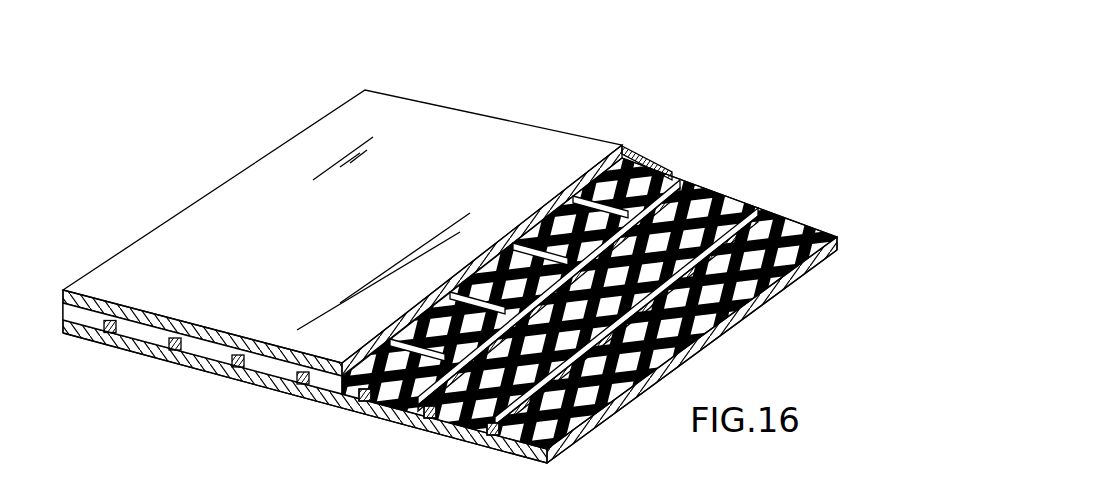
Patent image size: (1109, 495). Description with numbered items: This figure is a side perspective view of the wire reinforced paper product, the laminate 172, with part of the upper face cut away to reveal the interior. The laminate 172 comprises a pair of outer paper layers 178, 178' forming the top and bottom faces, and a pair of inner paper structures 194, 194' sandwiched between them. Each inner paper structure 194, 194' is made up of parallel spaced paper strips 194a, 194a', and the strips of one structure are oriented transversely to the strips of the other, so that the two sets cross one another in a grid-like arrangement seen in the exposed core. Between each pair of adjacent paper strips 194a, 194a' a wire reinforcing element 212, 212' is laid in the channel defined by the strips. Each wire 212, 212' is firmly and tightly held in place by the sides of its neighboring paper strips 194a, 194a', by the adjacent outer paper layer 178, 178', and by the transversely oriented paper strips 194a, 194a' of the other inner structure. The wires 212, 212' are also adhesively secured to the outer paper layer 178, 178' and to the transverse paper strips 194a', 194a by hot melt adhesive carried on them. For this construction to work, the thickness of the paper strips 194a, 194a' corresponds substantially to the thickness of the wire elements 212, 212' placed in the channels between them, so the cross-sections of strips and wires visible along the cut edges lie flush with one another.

The laminate 172 is at (432, 104).
The outer paper layer 178 is at (342, 203).
The outer paper layer 178' is at (450, 310).
The inner paper structure 194 is at (202, 319).
The inner paper structure 194' is at (188, 359).
The paper strip 194a is at (509, 266).
The paper strip 194a' is at (435, 436).
The wire reinforcing element 212 is at (588, 266).
The wire reinforcing element 212' is at (535, 279).